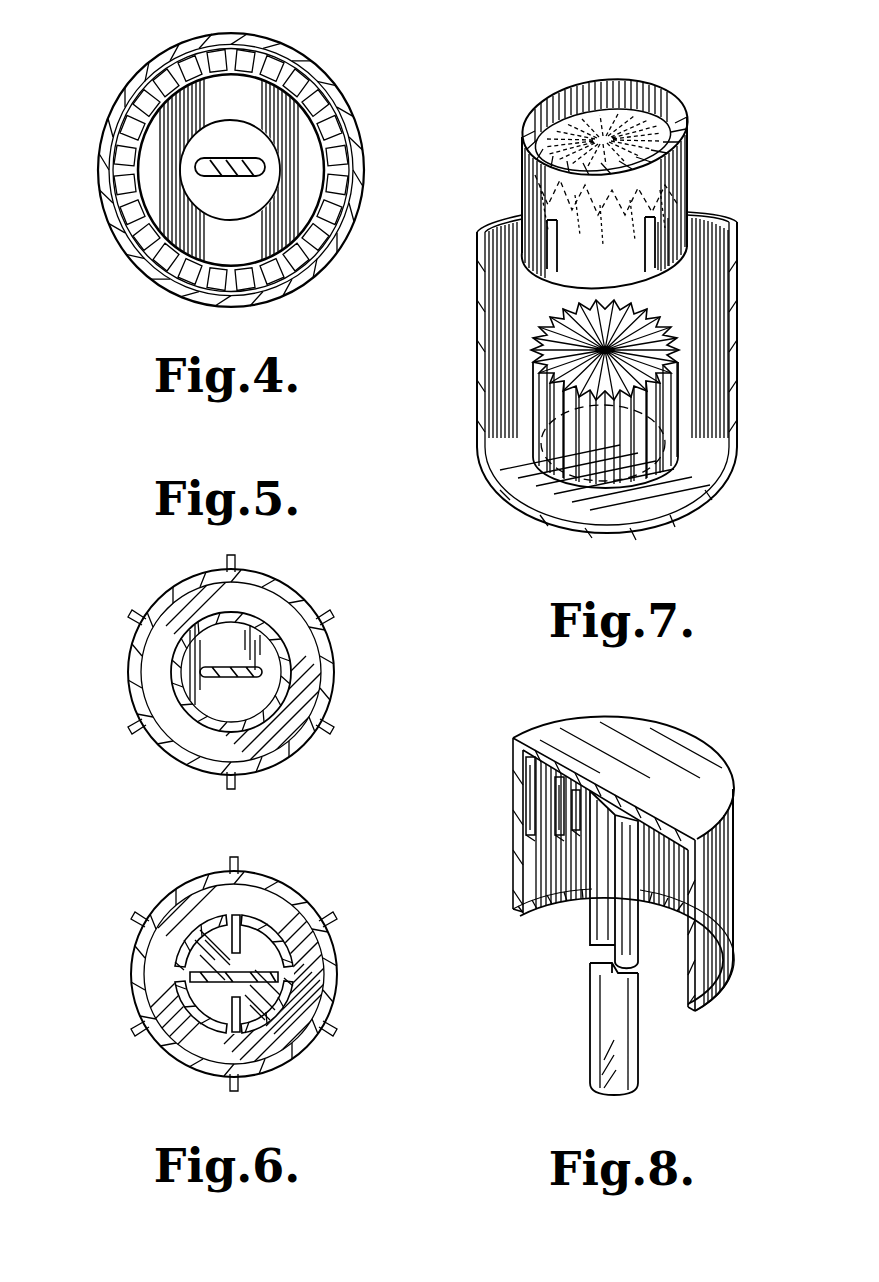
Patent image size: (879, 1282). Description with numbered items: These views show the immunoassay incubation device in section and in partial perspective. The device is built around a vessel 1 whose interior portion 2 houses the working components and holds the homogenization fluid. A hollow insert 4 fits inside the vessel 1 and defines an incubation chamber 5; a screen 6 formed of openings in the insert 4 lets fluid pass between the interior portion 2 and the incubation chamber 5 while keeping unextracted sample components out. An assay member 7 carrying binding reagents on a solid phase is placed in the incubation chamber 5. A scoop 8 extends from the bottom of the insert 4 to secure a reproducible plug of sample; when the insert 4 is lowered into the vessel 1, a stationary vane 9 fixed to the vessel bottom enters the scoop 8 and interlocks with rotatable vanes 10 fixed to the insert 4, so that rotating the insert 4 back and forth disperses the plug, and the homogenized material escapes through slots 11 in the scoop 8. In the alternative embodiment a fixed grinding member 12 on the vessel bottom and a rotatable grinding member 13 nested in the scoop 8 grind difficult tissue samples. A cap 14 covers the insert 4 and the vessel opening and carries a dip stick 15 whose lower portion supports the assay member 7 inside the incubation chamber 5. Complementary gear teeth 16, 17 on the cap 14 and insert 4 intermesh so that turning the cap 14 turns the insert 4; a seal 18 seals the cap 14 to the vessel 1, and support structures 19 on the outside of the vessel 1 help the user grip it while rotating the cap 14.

In FIG. 5, the vessel 1 is at (150, 733).
In FIG. 6, the vessel 1 is at (160, 1050).
In FIG. 7, the vessel 1 is at (700, 510).
In FIG. 5, the interior portion 2 is at (210, 745).
In FIG. 6, the interior portion 2 is at (218, 1054).
In FIG. 7, the interior portion 2 is at (508, 392).
In FIG. 4, the insert 4 is at (272, 56).
In FIG. 5, the insert 4 is at (257, 720).
In FIG. 7, the insert 4 is at (520, 165).
In FIG. 4, the incubation chamber 5 is at (257, 143).
In FIG. 5, the incubation chamber 5 is at (203, 637).
In FIG. 5, the screen 6 is at (273, 703).
In FIG. 5, the assay member 7 is at (255, 660).
In FIG. 8, the assay member 7 is at (604, 1050).
In FIG. 6, the scoop 8 is at (268, 1022).
In FIG. 7, the scoop 8 is at (665, 243).
In FIG. 6, the stationary vane 9 is at (213, 965).
In FIG. 6, the rotatable vanes 10 is at (257, 942).
In FIG. 6, the slots 11 is at (290, 976).
In FIG. 7, the slots 11 is at (548, 245).
In FIG. 7, the fixed grinding member 12 is at (545, 338).
In FIG. 7, the rotatable grinding member 13 is at (622, 217).
In FIG. 4, the cap 14 is at (124, 248).
In FIG. 8, the cap 14 is at (732, 896).
In FIG. 4, the dip stick 15 is at (198, 163).
In FIG. 8, the dip stick 15 is at (596, 935).
In FIG. 4, the gear teeth 16 is at (336, 208).
In FIG. 8, the gear teeth 16 is at (548, 806).
In FIG. 4, the gear teeth 17 is at (300, 262).
In FIG. 8, the seal 18 is at (548, 905).
In FIG. 6, the support structures 19 is at (132, 922).